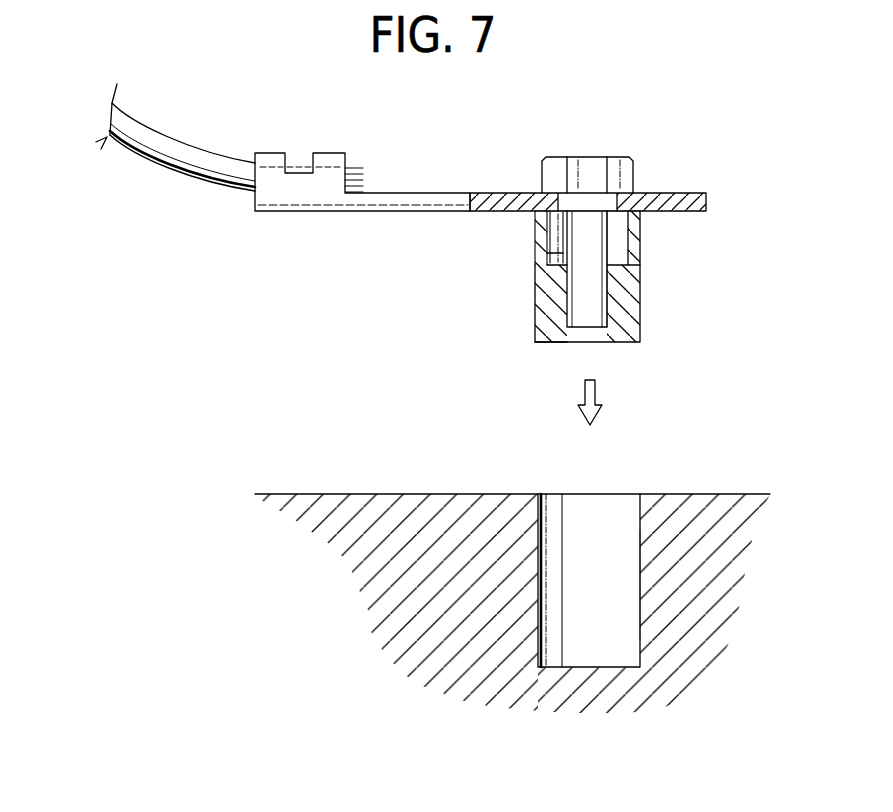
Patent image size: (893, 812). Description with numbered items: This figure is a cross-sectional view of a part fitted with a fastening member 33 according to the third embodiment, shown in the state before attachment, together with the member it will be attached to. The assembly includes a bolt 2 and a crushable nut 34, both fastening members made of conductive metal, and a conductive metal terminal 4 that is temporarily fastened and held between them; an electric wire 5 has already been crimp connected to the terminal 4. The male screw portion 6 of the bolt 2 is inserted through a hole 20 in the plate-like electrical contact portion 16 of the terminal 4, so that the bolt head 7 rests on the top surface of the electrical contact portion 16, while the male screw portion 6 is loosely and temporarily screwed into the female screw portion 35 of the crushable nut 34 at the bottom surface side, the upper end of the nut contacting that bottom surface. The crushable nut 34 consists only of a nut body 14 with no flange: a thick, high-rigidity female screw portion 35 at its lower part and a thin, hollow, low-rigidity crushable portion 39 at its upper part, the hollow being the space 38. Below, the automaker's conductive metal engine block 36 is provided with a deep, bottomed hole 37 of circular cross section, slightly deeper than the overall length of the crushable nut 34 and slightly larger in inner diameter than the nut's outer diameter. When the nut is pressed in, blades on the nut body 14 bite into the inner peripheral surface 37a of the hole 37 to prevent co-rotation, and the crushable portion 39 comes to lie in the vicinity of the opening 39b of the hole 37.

The bolt 2 is at (621, 206).
The terminal 4 is at (420, 191).
The electric wire 5 is at (172, 142).
The male screw portion 6 is at (598, 317).
The bolt head 7 is at (622, 180).
The nut body 14 is at (589, 300).
The electrical contact portion 16 is at (688, 192).
The hole 20 is at (607, 192).
The part fitted with a fastening member 33 is at (705, 115).
The crushable nut 34 is at (534, 343).
The female screw portion 35 is at (553, 318).
The engine block 36 is at (749, 491).
The hole 37 is at (615, 554).
The inner peripheral surface 37a is at (640, 620).
The space 38 is at (553, 253).
The crushable portion 39 is at (535, 223).
The opening 39b is at (597, 494).